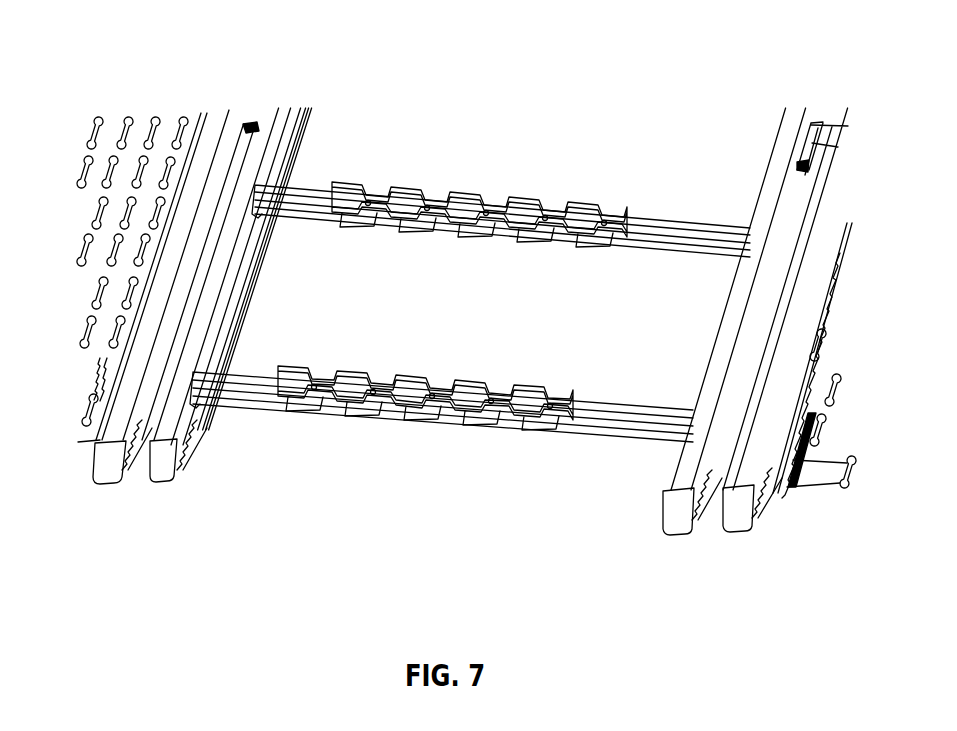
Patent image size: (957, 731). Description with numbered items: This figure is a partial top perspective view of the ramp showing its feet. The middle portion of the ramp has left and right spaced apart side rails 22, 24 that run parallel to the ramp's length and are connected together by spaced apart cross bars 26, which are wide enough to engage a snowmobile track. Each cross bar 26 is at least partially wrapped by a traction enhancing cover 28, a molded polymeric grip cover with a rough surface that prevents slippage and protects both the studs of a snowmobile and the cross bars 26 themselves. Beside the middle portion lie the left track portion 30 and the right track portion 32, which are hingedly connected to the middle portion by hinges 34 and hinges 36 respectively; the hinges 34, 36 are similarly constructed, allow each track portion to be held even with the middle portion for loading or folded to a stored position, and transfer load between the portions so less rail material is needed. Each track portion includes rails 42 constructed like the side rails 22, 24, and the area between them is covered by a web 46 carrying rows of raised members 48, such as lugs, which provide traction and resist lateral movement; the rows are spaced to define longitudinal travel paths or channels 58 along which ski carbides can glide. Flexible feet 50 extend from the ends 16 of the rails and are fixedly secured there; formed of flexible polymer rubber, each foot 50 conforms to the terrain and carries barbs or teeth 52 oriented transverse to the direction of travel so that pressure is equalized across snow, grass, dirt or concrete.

The ends of the rails 16 is at (290, 66).
The left side rail 22 is at (272, 135).
The right side rail 24 is at (775, 200).
The cross bar 26 is at (310, 190).
The traction enhancing cover 28 is at (458, 196).
The left track portion 30 is at (110, 126).
The right track portion 32 is at (820, 380).
The hinge 34 is at (253, 110).
The hinge 36 is at (800, 140).
The rail 42 is at (210, 117).
The web 46 is at (141, 120).
The raised member 48 is at (163, 168).
The flexible foot 50 is at (108, 481).
The barbs or teeth 52 is at (128, 470).
The longitudinal travel path or channel 58 is at (137, 230).